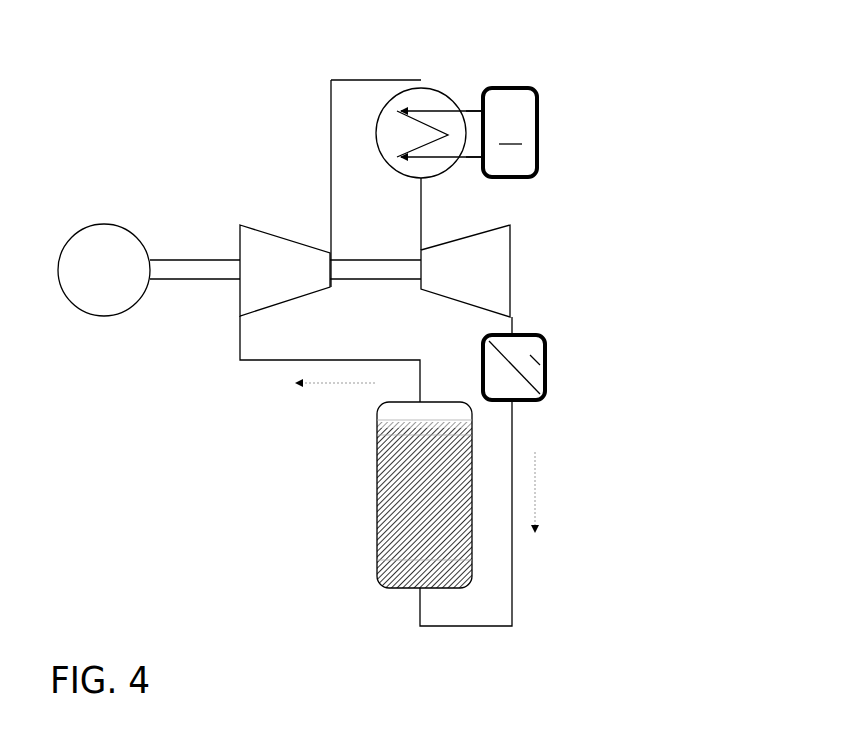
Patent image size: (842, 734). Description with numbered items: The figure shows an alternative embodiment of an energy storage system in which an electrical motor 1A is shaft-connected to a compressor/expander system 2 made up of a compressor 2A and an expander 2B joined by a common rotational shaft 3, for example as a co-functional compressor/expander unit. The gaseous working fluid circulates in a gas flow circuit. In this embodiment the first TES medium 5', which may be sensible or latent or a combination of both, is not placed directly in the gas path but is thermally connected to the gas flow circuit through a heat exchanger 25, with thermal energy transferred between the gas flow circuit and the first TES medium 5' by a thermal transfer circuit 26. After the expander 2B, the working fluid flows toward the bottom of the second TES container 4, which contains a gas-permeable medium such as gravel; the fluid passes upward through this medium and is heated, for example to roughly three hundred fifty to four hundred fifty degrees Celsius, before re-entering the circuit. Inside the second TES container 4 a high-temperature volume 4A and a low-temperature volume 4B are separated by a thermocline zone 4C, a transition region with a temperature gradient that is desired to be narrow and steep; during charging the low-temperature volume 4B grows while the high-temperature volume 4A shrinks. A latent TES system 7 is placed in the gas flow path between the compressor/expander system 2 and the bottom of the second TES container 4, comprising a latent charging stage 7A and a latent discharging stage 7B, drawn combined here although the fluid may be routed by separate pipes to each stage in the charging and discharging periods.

The electrical motor 1A is at (149, 252).
The compressor/expander system 2 is at (369, 213).
The compressor 2A is at (285, 270).
The expander 2B is at (465, 271).
The common rotational shaft 3 is at (375, 258).
The second TES container 4 is at (352, 496).
The high-temperature volume 4A is at (397, 417).
The low-temperature volume 4B is at (383, 562).
The thermocline zone 4C is at (383, 445).
The first TES medium 5' is at (510, 132).
The latent TES system 7 is at (512, 281).
The latent charging stage 7A is at (497, 383).
The latent discharging stage 7B is at (530, 355).
The heat exchanger 25 is at (446, 88).
The thermal transfer circuit 26 is at (478, 110).